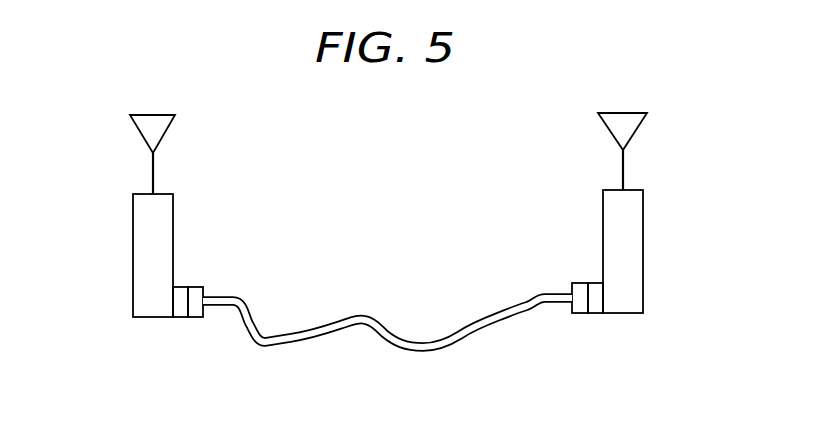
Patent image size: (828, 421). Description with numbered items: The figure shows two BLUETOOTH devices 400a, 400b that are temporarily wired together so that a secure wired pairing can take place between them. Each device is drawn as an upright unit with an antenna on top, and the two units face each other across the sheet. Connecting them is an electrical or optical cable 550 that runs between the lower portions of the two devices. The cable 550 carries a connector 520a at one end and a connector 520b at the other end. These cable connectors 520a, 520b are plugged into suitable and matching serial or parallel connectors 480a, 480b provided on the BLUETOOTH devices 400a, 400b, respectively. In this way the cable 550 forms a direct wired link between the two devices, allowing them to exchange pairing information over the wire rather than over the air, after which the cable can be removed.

The BLUETOOTH device 400a is at (131, 257).
The BLUETOOTH device 400b is at (643, 252).
The serial (or parallel) connector 480a is at (183, 318).
The serial (or parallel) connector 480b is at (597, 315).
The connector 520a is at (195, 287).
The connector 520b is at (582, 283).
The electrical or optical cable 550 is at (423, 355).